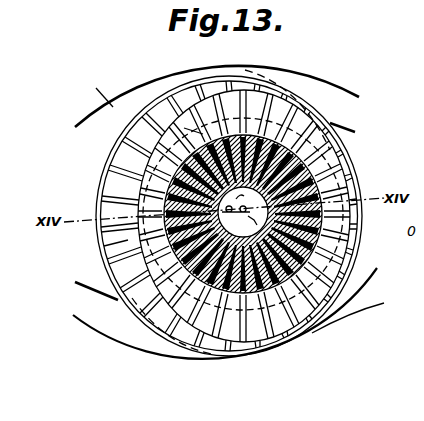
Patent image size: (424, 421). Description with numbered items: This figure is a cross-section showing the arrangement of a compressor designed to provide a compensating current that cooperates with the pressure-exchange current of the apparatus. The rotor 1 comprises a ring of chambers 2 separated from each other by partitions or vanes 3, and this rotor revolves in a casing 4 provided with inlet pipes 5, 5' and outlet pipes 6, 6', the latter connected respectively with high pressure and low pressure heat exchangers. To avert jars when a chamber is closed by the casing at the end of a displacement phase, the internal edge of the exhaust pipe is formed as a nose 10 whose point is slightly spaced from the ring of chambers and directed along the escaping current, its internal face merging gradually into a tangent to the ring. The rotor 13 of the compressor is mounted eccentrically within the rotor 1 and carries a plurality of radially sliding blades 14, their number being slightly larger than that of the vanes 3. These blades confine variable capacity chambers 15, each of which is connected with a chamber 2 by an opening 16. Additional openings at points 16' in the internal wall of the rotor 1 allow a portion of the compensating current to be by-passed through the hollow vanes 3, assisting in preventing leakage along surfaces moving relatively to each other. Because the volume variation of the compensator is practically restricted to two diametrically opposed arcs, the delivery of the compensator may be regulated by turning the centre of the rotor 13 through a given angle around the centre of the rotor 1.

The rotor 1 is at (253, 315).
The chambers 2 is at (325, 156).
The partitions or vanes 3 is at (134, 304).
The casing 4 is at (356, 258).
The inlet pipe 5 is at (96, 91).
The inlet pipe 5' is at (348, 324).
The outlet pipe 6 is at (217, 101).
The outlet pipe 6' is at (225, 313).
The nose 10 is at (332, 125).
The rotor of the compressor 13 is at (346, 190).
The radially sliding blades 14 is at (100, 158).
The variable capacity chambers 15 is at (113, 252).
The opening 16 is at (205, 216).
The additional openings 16' is at (181, 88).